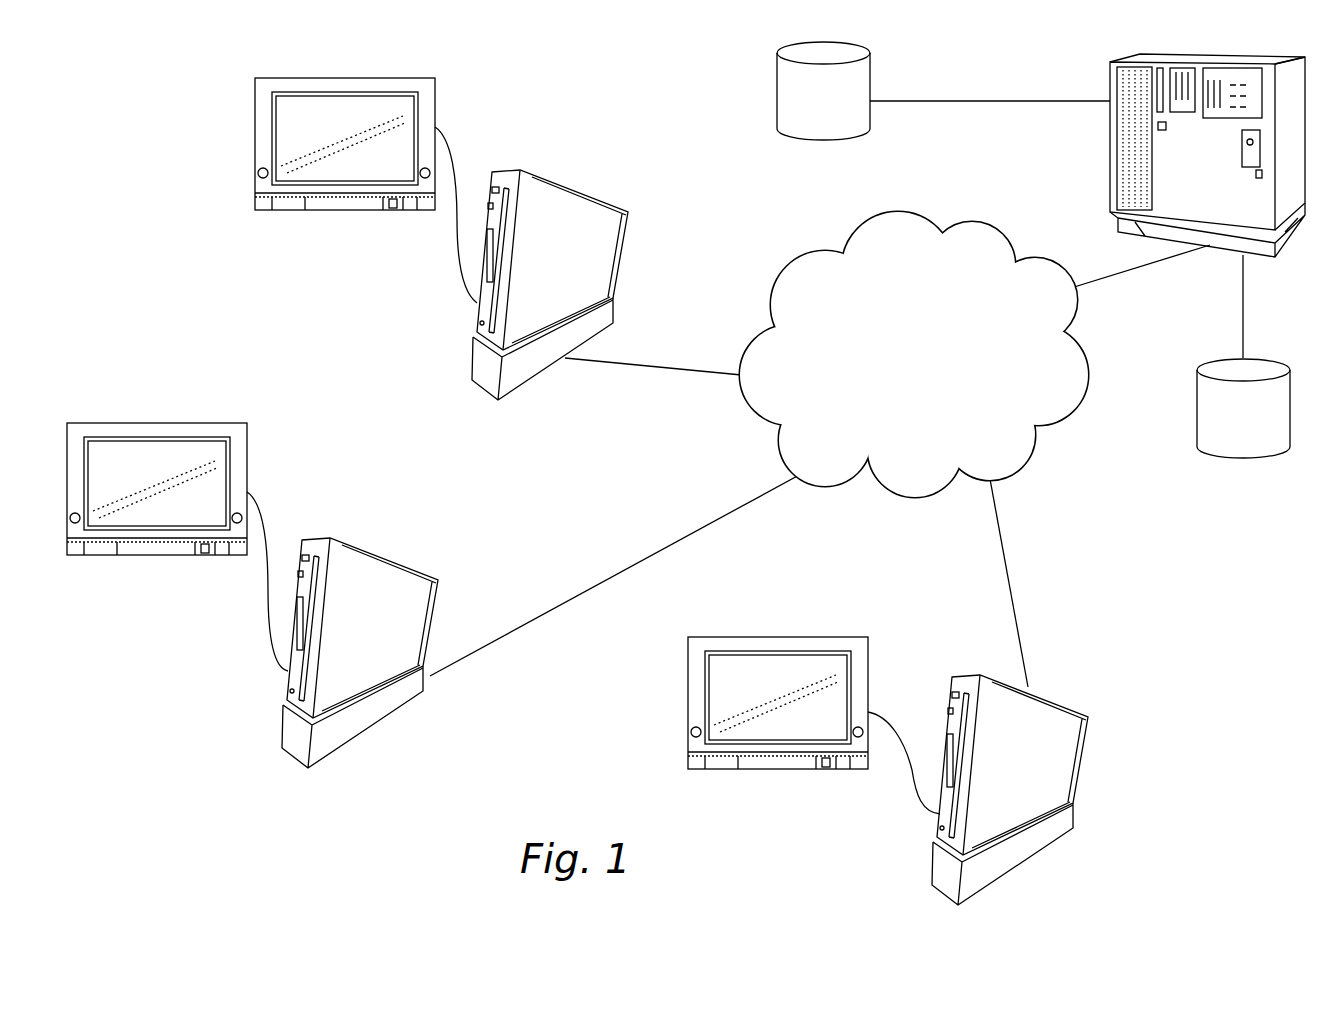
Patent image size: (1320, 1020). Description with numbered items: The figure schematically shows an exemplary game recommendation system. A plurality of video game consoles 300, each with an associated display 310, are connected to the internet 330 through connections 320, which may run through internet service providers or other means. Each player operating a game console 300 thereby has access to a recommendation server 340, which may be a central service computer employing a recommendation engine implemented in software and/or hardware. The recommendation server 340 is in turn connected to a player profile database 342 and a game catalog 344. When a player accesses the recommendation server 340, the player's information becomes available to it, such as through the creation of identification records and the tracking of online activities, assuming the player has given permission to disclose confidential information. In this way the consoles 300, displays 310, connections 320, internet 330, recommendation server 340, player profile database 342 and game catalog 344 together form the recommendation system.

The video game console 300 is at (567, 212).
The display 310 is at (287, 133).
The connection 320 is at (672, 370).
The internet 330 is at (1090, 394).
The recommendation server 340 is at (1110, 130).
The player profile database 342 is at (773, 92).
The game catalog 344 is at (1195, 408).